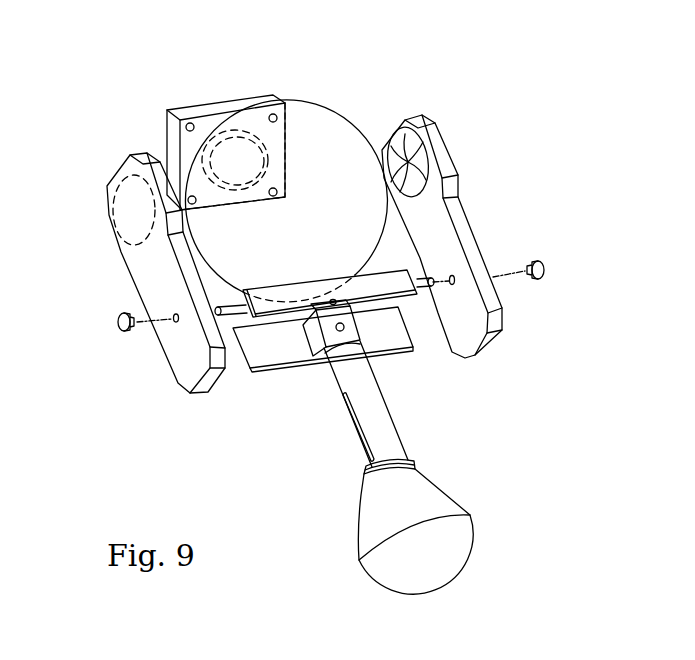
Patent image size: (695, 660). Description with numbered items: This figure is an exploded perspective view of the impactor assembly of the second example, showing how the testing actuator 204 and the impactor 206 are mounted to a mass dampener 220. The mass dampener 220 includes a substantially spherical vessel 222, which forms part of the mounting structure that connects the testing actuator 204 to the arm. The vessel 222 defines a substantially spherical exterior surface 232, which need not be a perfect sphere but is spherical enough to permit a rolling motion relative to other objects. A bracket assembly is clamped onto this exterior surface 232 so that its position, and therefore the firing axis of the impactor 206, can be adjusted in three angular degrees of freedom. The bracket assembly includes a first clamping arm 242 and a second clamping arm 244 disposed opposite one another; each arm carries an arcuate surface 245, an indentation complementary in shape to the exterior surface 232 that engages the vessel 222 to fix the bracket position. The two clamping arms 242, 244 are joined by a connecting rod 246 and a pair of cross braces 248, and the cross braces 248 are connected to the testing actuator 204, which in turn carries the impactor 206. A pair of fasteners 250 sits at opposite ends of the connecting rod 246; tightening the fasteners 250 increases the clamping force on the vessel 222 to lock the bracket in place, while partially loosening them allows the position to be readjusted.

The mass dampener 220 is at (335, 93).
The substantially spherical vessel 222 is at (362, 136).
The substantially spherical exterior surface 232 is at (303, 243).
The first clamping arm 242 is at (120, 256).
The second clamping arm 244 is at (213, 106).
The arcuate surfaces 245 is at (120, 163).
The connecting rod 246 is at (402, 288).
The cross braces 248 is at (383, 270).
The fasteners 250 is at (113, 323).
The testing actuator 204 is at (397, 431).
The impactor 206 is at (478, 545).